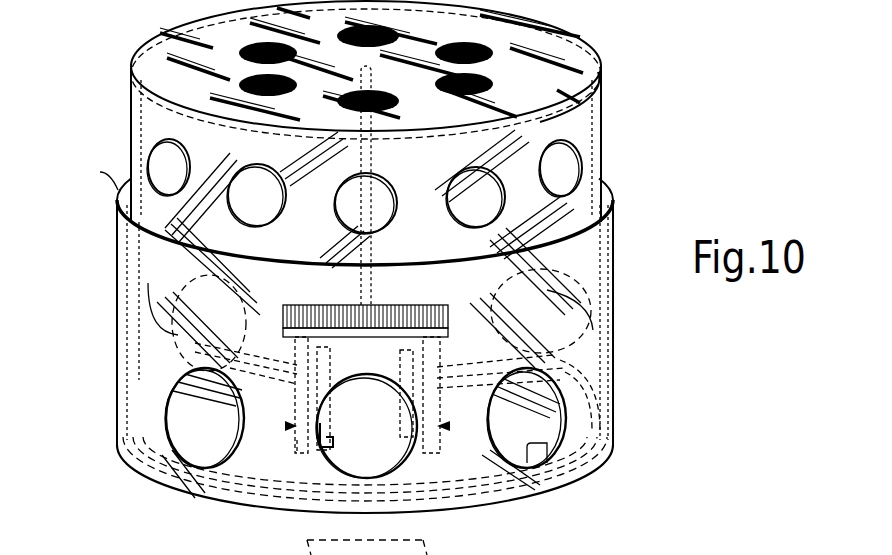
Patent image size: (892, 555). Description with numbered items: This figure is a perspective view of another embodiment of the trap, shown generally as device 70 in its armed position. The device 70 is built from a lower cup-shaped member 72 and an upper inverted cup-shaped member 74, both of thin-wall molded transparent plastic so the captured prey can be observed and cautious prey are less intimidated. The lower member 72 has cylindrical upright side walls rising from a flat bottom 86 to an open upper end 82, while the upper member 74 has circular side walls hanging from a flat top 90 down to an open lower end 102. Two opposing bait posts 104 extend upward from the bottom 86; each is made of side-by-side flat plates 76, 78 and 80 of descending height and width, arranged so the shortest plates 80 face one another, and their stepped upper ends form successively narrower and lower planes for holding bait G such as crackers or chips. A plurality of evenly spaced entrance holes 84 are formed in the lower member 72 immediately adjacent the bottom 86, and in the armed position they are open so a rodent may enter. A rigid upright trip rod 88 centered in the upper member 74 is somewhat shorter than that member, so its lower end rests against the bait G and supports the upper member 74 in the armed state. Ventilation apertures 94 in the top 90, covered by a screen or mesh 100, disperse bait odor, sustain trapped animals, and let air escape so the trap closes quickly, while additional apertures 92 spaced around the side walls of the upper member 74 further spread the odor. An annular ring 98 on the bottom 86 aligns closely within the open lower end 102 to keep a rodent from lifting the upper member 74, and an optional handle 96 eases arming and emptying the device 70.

The device 70 is at (648, 197).
The lower cup-shaped member 72 is at (617, 247).
The upper inverted cup-shaped member 74 is at (607, 108).
The flat plate 76 is at (297, 440).
The flat plate 78 is at (297, 401).
The flat plate 80 is at (333, 430).
The open upper end 82 is at (130, 173).
The entrance holes 84 is at (540, 492).
The flat bottom 86 is at (470, 513).
The trip rod 88 is at (371, 201).
The flat top 90 is at (565, 62).
The ventilation apertures 92 is at (567, 175).
The ventilation apertures 94 is at (480, 43).
The handle 96 is at (321, 547).
The annular ring 98 is at (593, 392).
The screen or mesh 100 is at (250, 47).
The open lower end 102 is at (613, 335).
The bait posts 104 is at (286, 425).
The bait G is at (424, 308).